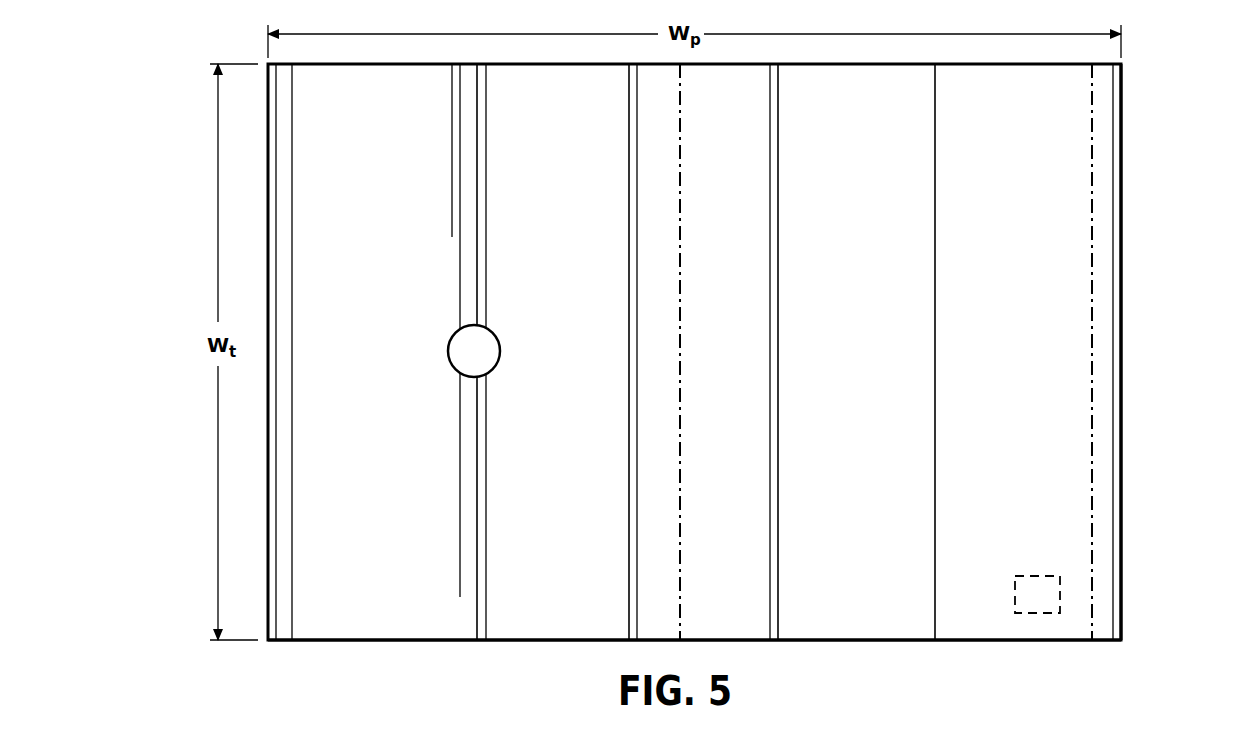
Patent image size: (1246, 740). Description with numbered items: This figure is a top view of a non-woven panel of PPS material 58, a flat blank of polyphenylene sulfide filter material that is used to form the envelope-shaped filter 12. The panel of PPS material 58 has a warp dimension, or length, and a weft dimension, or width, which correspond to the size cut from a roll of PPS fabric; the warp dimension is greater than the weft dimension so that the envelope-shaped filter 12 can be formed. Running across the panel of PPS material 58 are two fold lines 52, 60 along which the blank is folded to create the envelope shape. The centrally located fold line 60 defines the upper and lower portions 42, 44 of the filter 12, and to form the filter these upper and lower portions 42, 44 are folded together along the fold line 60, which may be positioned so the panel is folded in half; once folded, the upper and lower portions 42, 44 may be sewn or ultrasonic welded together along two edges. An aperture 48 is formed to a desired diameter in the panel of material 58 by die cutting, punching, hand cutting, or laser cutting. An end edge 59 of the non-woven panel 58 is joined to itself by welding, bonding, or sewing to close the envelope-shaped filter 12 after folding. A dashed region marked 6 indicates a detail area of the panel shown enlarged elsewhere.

The envelope-shaped filter 12 is at (1180, 91).
The upper portion 42 is at (392, 447).
The lower portion 44 is at (1000, 447).
The aperture 48 is at (452, 333).
The fold line 52 is at (1093, 178).
The non-woven panel of PPS material 58 is at (1122, 331).
The end edge 59 is at (845, 641).
The fold line 60 is at (681, 333).
The detail region of FIG. 6 is at (1062, 576).